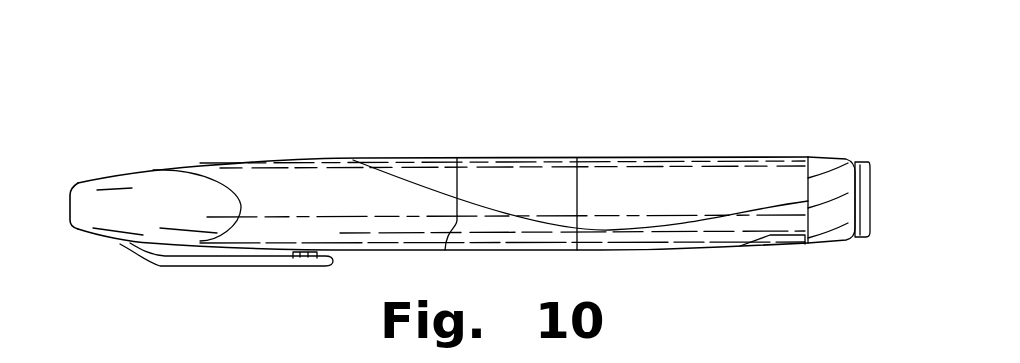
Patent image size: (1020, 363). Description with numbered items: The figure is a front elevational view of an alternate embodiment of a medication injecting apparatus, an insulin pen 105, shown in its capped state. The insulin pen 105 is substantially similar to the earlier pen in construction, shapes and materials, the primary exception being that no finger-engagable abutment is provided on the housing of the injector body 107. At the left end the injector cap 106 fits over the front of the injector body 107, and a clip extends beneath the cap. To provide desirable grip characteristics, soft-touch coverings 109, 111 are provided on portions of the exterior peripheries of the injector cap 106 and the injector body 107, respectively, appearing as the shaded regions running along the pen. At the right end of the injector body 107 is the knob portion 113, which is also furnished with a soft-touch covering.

The insulin pen 105 is at (787, 111).
The injector cap 106 is at (360, 252).
The injector body 107 is at (653, 252).
The soft-touch covering 109 is at (423, 177).
The soft-touch covering 111 is at (638, 178).
The knob portion 113 is at (830, 240).